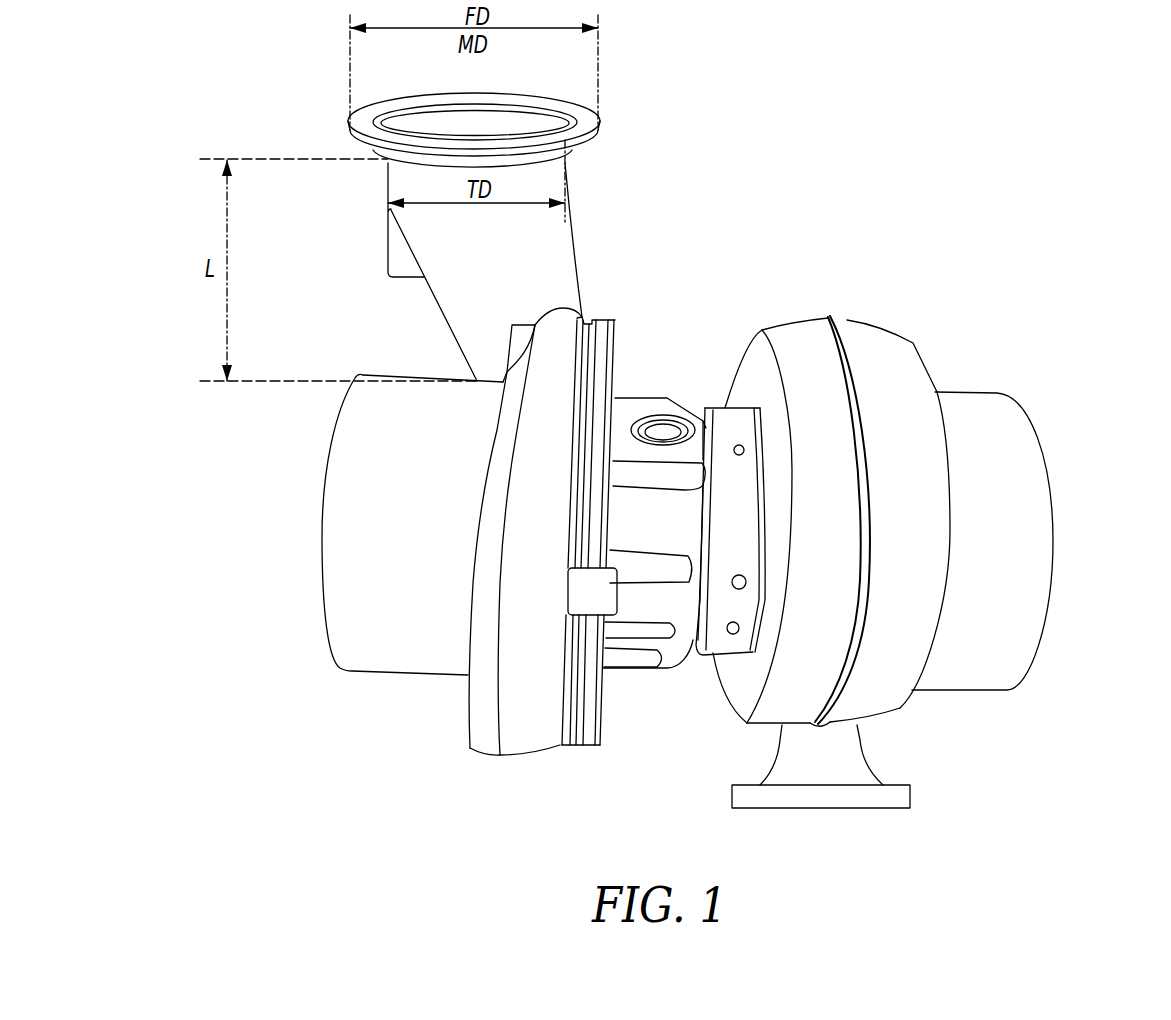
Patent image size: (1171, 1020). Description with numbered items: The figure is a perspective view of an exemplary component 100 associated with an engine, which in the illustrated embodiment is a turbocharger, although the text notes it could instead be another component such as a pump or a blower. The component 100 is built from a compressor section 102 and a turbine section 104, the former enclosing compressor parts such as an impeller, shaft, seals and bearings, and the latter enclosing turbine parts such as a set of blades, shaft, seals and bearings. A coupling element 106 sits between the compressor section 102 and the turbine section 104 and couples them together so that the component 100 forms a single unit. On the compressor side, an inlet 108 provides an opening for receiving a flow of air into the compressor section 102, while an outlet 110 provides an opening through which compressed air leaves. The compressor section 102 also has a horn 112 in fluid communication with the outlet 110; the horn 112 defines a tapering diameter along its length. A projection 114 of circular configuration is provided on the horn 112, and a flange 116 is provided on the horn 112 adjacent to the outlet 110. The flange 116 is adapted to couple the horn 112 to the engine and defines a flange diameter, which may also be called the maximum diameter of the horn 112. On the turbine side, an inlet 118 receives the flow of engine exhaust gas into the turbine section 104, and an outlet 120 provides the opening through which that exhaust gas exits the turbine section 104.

The component 100 is at (1072, 142).
The compressor section 102 is at (350, 295).
The turbine section 104 is at (995, 336).
The coupling element 106 is at (691, 355).
The inlet 108 is at (312, 533).
The outlet 110 is at (509, 122).
The horn 112 is at (573, 228).
The projection 114 is at (388, 233).
The flange 116 is at (353, 127).
The inlet 118 is at (877, 826).
The outlet 120 is at (1068, 534).